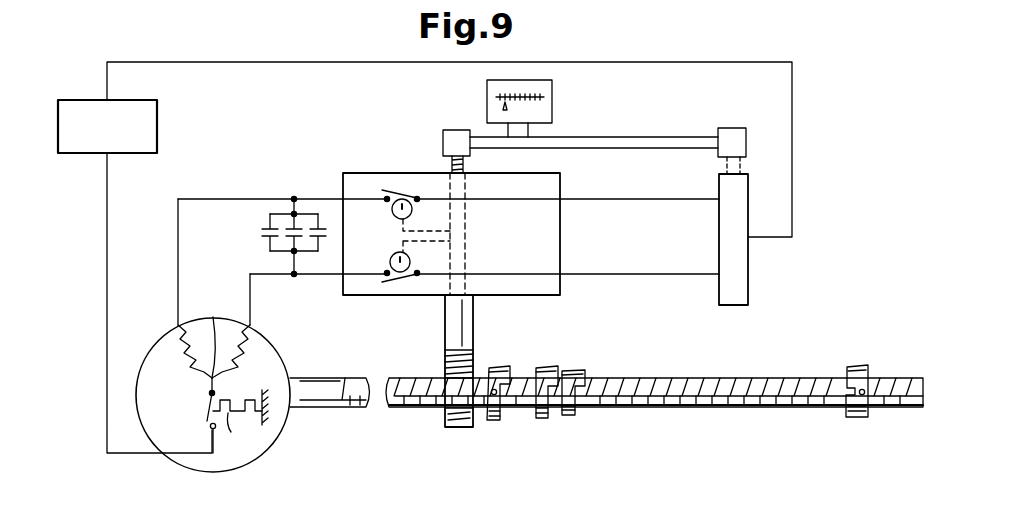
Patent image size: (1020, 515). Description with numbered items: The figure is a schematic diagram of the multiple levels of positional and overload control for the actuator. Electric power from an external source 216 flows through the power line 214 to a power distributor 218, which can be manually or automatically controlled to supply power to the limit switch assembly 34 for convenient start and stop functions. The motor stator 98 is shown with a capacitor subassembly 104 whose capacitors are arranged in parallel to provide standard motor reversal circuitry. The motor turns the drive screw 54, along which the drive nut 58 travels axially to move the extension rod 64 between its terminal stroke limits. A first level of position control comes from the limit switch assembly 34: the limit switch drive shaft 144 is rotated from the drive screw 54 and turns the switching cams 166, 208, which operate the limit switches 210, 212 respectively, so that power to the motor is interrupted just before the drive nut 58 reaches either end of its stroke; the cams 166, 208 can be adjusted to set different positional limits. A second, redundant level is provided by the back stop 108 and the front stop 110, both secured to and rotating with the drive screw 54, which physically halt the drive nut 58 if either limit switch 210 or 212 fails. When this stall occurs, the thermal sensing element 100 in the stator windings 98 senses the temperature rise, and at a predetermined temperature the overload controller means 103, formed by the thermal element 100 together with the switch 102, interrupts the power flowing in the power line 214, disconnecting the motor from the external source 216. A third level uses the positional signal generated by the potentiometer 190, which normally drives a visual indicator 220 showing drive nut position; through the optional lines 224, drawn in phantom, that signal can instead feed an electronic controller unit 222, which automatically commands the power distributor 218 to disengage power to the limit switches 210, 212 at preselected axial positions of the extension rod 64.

The limit switch assembly 34 is at (368, 305).
The drive screw 54 is at (727, 377).
The drive nut 58 is at (545, 419).
The extension rod 64 is at (578, 371).
The motor stator 98 is at (213, 320).
The thermal sensing element 100 is at (240, 424).
The switch 102 is at (207, 402).
The overload controller means 103 is at (200, 428).
The capacitor subassembly 104 is at (249, 240).
The back stop 108 is at (497, 420).
The front stop 110 is at (847, 420).
The drive shaft 144 is at (474, 318).
The switching cam 166 is at (393, 212).
The potentiometer 190 is at (444, 133).
The switching cam 208 is at (392, 262).
The limit switch 210 is at (410, 292).
The limit switch 212 is at (411, 180).
The power line 214 is at (275, 62).
The external source 216 is at (70, 100).
The power distributor 218 is at (749, 288).
The indicator 220 is at (541, 80).
The electronic controller unit 222 is at (760, 118).
The optional lines 224 is at (580, 137).